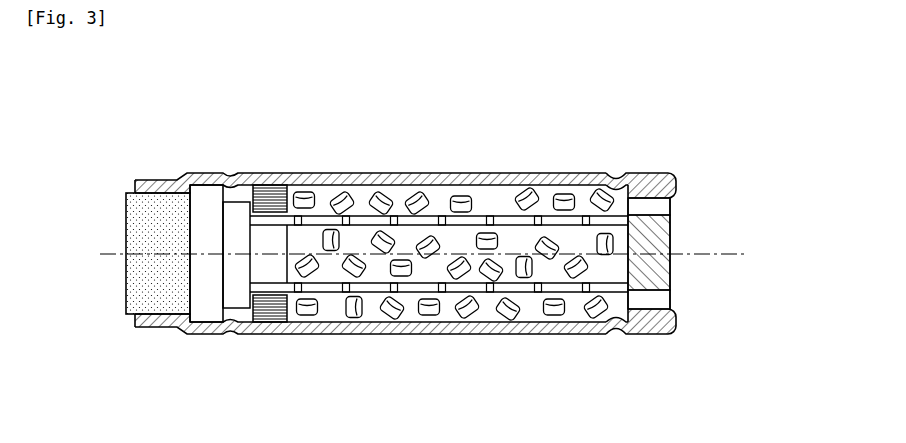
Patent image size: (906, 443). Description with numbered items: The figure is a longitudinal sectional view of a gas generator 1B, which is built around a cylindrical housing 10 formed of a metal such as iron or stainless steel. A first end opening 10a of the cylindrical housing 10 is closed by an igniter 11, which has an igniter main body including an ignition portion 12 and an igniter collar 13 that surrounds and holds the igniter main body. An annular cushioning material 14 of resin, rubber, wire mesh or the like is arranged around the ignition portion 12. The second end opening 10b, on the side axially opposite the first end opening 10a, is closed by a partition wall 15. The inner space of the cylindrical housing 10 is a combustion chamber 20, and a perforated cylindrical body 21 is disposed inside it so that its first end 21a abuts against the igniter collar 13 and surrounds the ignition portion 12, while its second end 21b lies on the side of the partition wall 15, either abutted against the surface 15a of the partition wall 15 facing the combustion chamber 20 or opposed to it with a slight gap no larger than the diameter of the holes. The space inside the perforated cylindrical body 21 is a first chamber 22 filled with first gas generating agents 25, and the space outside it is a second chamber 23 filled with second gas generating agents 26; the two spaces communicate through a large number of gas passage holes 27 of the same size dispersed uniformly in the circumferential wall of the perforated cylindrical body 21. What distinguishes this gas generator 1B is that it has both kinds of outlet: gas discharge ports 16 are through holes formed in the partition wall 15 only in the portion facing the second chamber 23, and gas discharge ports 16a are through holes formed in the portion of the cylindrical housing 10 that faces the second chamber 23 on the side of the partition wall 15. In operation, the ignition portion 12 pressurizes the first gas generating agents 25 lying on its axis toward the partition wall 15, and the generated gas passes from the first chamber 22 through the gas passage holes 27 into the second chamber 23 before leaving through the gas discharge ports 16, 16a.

The gas generator 1B is at (381, 162).
The cylindrical housing 10 is at (516, 173).
The first end opening 10a is at (135, 191).
The second end opening 10b is at (672, 196).
The igniter 11 is at (149, 396).
The ignition portion 12 is at (267, 268).
The igniter collar 13 is at (200, 267).
The annular cushioning material 14 is at (268, 188).
The partition wall 15 is at (633, 268).
The surface of the partition wall 15a is at (672, 299).
The gas discharge ports 16 is at (648, 206).
The gas discharge ports 16a is at (590, 173).
The combustion chamber 20 is at (484, 195).
The perforated cylindrical body 21 is at (323, 214).
The first end 21a is at (247, 221).
The second end 21b is at (671, 222).
The first chamber 22 is at (340, 285).
The second chamber 23 is at (486, 315).
The first gas generating agents 25 is at (393, 274).
The second gas generating agents 26 is at (549, 313).
The gas passage holes 27 is at (540, 214).